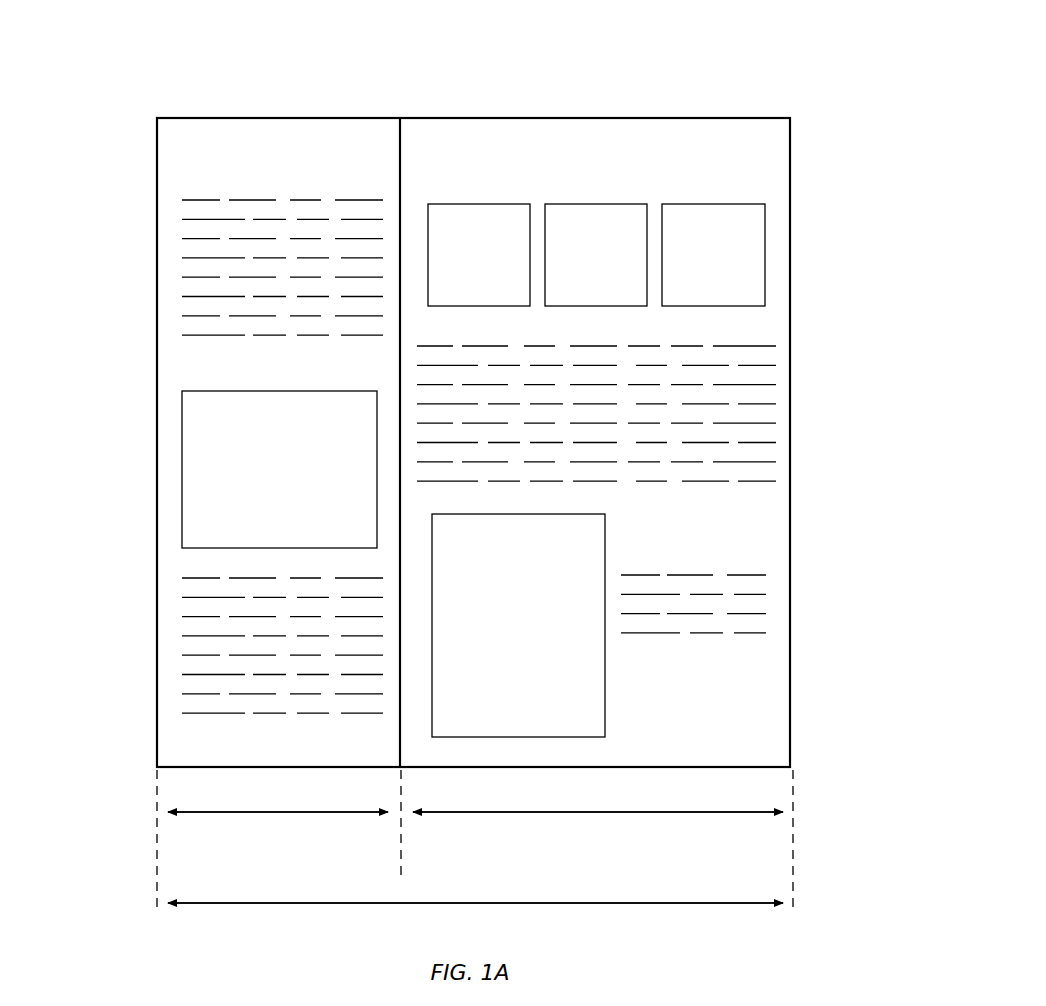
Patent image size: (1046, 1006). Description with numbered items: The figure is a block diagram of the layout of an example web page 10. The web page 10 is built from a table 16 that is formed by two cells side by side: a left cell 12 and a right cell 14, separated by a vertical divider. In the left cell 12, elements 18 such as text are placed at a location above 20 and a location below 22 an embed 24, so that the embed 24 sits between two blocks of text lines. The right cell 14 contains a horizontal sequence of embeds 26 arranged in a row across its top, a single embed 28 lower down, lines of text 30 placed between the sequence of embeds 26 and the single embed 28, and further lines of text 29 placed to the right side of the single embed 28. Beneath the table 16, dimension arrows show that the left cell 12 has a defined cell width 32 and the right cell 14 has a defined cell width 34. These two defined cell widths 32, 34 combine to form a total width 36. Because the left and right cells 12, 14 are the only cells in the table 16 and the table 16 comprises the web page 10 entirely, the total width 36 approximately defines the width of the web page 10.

The web page 10 is at (790, 100).
The left cell 12 is at (385, 766).
The right cell 14 is at (600, 766).
The table 16 is at (420, 128).
The elements 18 is at (193, 200).
The location above 20 is at (177, 268).
The location below 22 is at (177, 645).
The embed 24 is at (267, 491).
The horizontal sequence of embeds 26 is at (428, 195).
The single embed 28 is at (505, 648).
The lines of text 29 is at (797, 568).
The lines of text 30 is at (797, 340).
The cell width 32 is at (278, 815).
The cell width 34 is at (595, 815).
The total width 36 is at (510, 903).